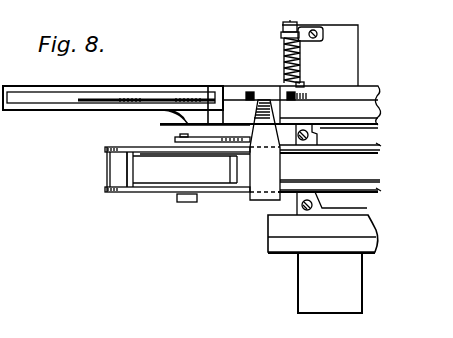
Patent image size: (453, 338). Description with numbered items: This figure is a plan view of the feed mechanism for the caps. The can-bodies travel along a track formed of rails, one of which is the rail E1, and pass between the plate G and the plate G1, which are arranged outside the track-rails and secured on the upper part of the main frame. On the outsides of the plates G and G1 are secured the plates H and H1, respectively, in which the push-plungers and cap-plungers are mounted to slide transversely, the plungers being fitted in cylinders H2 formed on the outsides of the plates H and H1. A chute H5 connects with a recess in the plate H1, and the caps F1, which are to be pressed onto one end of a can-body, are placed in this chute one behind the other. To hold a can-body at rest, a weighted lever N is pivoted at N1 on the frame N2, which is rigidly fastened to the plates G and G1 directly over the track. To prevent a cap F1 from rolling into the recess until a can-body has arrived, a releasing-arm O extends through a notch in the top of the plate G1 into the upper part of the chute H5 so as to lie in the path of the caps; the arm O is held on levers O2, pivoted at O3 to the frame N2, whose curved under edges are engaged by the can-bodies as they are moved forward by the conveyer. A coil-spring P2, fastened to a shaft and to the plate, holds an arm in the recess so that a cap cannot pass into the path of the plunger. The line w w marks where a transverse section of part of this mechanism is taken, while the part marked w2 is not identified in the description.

The chute H5 is at (126, 96).
The cap F1 is at (180, 93).
The plate H1 is at (371, 90).
The plate G1 is at (376, 117).
The rail E1 is at (253, 92).
The section line w is at (278, 25).
The cylinder H2 is at (322, 169).
The coil-spring P2 is at (296, 73).
The releasing-arm O is at (265, 150).
The lever O2 is at (215, 140).
The pivot O3 is at (189, 202).
The weighted lever N is at (177, 169).
The pivot N1 is at (158, 190).
The frame N2 is at (371, 153).
The set screw w2 is at (299, 134).
The plate G is at (374, 233).
The plate H is at (382, 247).